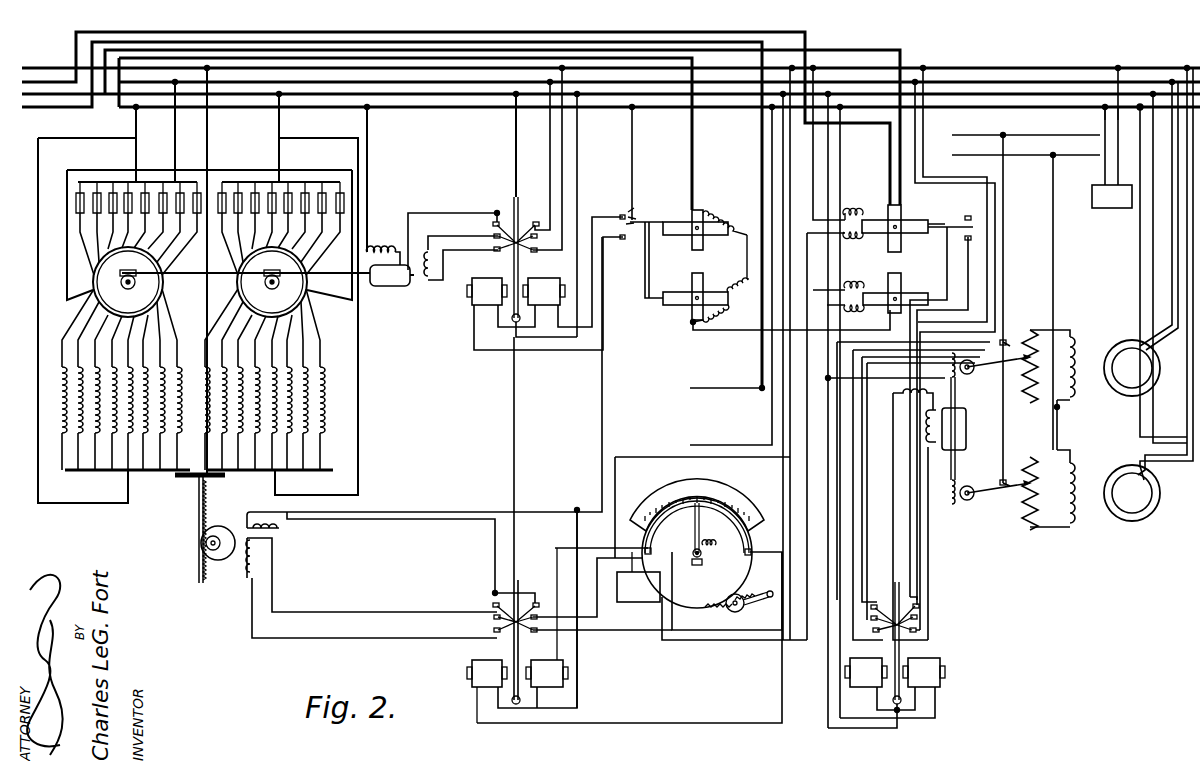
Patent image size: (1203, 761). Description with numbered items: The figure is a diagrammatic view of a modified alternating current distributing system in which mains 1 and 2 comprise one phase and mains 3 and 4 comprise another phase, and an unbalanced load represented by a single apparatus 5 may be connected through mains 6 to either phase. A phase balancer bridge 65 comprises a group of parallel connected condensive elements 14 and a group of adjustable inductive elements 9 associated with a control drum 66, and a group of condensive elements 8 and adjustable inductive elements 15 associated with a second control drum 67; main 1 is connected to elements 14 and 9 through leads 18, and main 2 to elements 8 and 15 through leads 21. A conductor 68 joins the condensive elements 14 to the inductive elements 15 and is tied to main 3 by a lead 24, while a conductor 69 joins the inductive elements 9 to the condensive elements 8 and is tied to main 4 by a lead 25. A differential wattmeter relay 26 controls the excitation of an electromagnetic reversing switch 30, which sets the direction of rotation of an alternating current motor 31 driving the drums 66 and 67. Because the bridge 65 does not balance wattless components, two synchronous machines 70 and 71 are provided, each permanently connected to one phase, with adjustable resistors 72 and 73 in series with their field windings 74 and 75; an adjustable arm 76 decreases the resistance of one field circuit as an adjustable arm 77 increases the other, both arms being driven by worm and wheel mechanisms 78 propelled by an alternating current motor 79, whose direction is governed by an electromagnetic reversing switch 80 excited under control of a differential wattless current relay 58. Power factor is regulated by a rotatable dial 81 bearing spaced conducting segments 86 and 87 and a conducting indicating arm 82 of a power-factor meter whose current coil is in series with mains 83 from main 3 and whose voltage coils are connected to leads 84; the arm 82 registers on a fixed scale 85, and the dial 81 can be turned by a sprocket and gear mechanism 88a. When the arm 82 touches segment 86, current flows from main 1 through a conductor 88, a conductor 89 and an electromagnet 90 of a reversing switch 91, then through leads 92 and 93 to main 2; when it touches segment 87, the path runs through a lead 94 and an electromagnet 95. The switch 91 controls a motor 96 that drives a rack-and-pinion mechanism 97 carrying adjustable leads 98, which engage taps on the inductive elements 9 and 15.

The main 1 is at (62, 100).
The main 2 is at (95, 98).
The main 3 is at (60, 82).
The main 4 is at (38, 68).
The apparatus 5 is at (1108, 200).
The mains 6 is at (1116, 124).
The condensive elements 8 is at (346, 208).
The adjustable inductive elements 9 is at (60, 380).
The condensive elements 14 is at (76, 200).
The adjustable inductive elements 15 is at (316, 368).
The leads 18 is at (142, 150).
The leads 21 is at (358, 152).
The lead 24 is at (175, 136).
The lead 25 is at (208, 136).
The differential wattmeter relay 26 is at (690, 218).
The electromagnetic reversing switch 30 is at (494, 273).
The alternating current motor 31 is at (418, 306).
The differential wattless current relay 58 is at (904, 216).
The bridge 65 is at (394, 340).
The control drum 66 is at (139, 309).
The control drum 67 is at (283, 309).
The conductor 68 is at (228, 164).
The conductor 69 is at (182, 276).
The synchronous machine 70 is at (1132, 380).
The synchronous machine 71 is at (1145, 510).
The adjustable resistor 72 is at (1028, 372).
The adjustable resistor 73 is at (1025, 505).
The field winding 74 is at (1076, 362).
The field winding 75 is at (1078, 510).
The adjustable arm 76 is at (990, 372).
The adjustable arm 77 is at (990, 502).
The worm and wheel mechanisms 78 is at (958, 486).
The alternating current motor 79 is at (927, 436).
The electromagnetic reversing switch 80 is at (904, 660).
The rotatable dial 81 is at (698, 553).
The conducting indicating arm 82 is at (694, 522).
The mains 83 is at (765, 648).
The leads 84 is at (638, 577).
The scale 85 is at (728, 492).
The conducting segment 86 is at (652, 549).
The conducting segment 87 is at (726, 528).
The conductor 88 is at (770, 422).
The sprocket and gear mechanism 88a is at (753, 594).
The conductor 89 is at (588, 548).
The electromagnet 90 is at (547, 617).
The reversing switch 91 is at (462, 704).
The lead 92 is at (577, 668).
The lead 93 is at (648, 450).
The lead 94 is at (655, 730).
The electromagnet 95 is at (487, 691).
The motor 96 is at (195, 546).
The rack-and-pinion mechanism 97 is at (206, 510).
The adjustable leads 98 is at (178, 468).